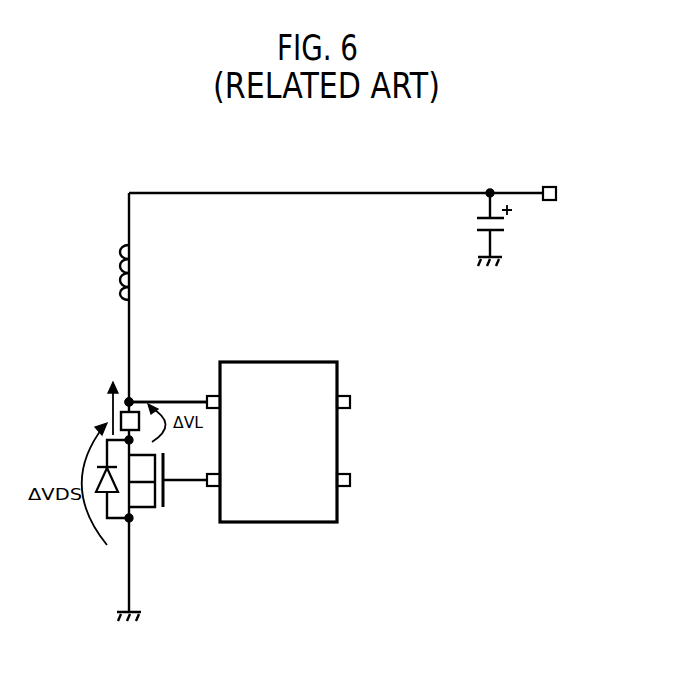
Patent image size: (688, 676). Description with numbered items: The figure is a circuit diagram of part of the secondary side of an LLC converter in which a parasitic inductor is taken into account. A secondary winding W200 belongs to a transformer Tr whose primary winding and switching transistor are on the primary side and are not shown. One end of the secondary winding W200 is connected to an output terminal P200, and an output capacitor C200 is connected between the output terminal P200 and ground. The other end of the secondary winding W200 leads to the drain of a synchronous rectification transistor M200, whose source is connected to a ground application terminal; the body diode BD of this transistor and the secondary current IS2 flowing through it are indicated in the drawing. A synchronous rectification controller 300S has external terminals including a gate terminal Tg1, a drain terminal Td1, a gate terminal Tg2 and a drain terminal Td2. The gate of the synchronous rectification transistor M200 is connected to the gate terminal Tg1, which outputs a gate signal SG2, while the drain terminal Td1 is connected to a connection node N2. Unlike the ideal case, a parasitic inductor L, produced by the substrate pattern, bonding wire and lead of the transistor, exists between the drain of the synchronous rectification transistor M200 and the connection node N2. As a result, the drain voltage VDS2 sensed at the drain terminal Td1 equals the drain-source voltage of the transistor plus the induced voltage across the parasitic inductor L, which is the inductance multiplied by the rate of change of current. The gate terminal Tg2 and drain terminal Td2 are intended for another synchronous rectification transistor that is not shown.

The transformer Tr is at (118, 242).
The secondary winding W200 is at (139, 265).
The output terminal P200 is at (549, 187).
The output capacitor C200 is at (467, 229).
The connection node N2 is at (123, 394).
The synchronous rectification controller 300S is at (323, 362).
The drain terminal Td1 is at (209, 396).
The gate terminal Tg1 is at (209, 474).
The drain terminal Td2 is at (349, 397).
The gate terminal Tg2 is at (349, 476).
The drain voltage VDS2 is at (168, 389).
The parasitic inductor L is at (137, 423).
The secondary current IS2 is at (92, 408).
The body diode BD is at (121, 479).
The synchronous rectification transistor M200 is at (160, 510).
The gate signal SG2 is at (189, 496).